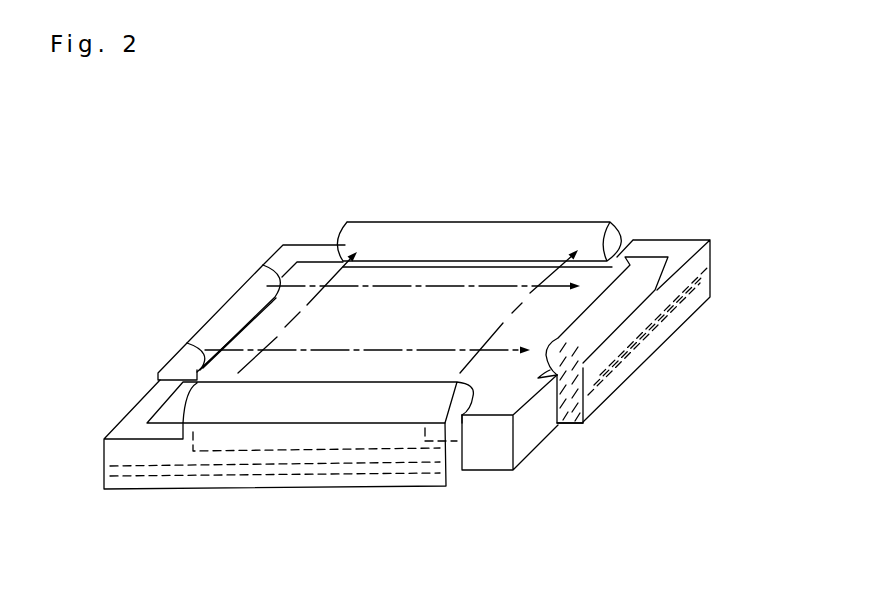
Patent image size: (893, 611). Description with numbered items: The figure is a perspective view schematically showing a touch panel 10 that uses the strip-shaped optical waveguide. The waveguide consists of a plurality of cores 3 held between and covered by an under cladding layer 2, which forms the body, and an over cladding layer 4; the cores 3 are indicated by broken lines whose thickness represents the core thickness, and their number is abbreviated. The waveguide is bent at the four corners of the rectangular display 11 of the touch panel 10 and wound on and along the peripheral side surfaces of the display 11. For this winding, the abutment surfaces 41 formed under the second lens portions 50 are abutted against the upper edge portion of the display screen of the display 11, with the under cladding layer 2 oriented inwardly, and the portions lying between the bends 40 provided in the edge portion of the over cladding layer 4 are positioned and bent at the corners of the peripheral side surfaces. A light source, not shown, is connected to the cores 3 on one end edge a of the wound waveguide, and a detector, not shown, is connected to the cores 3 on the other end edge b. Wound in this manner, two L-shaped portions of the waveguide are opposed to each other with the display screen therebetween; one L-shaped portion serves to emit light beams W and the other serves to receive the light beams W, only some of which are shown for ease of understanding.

The touch panel 10 is at (266, 183).
The display 11 is at (316, 218).
The under cladding layer 2 is at (463, 443).
The cores 3 is at (387, 475).
The over cladding layer 4 is at (267, 482).
The bends 40 is at (419, 212).
The abutment surfaces 41 is at (538, 378).
The second lens portions 50 is at (548, 238).
The light beams W is at (520, 305).
The one end edge a is at (448, 475).
The other end edge b is at (558, 425).